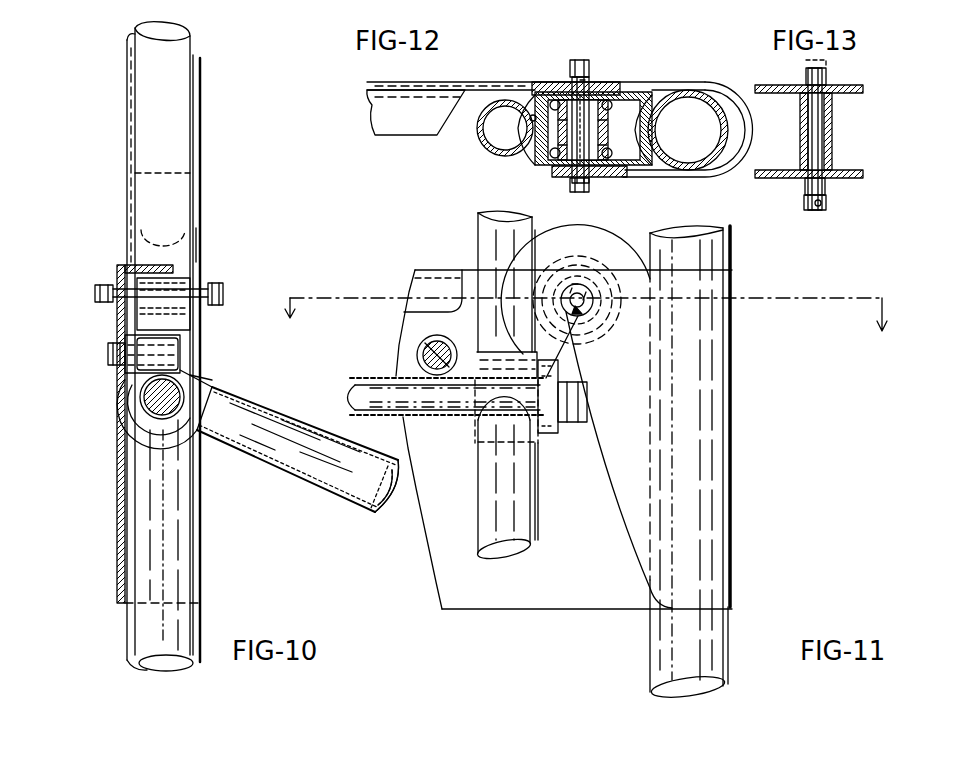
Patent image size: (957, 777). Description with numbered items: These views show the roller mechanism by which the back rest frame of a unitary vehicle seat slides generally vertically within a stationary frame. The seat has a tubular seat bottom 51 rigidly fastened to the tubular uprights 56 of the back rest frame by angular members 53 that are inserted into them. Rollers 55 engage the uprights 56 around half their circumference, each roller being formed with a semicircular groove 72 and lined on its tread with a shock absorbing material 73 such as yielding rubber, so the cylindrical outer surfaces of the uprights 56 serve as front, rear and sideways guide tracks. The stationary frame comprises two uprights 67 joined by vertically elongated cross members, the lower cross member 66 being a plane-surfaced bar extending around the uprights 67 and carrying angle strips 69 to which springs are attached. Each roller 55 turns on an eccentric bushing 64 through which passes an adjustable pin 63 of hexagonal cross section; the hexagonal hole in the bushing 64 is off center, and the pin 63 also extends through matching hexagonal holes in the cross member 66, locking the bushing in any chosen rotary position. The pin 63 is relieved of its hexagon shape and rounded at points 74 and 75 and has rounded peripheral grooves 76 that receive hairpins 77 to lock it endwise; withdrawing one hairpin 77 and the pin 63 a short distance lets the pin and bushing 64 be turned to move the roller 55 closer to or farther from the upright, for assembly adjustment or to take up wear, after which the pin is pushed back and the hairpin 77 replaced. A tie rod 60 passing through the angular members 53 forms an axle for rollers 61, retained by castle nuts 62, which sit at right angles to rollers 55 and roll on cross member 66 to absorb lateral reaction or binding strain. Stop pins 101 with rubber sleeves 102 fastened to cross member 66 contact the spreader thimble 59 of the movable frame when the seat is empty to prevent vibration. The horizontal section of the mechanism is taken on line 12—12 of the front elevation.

In FIG. 10, the tubular seat bottom 51 is at (378, 500).
In FIG. 11, the tubular seat bottom 51 is at (497, 500).
In FIG. 10, the angular members 53 is at (148, 190).
In FIG. 11, the angular members 53 is at (497, 368).
In FIG. 10, the rollers 55 is at (198, 247).
In FIG. 11, the rollers 55 is at (603, 238).
In FIG. 12, the rollers 55 is at (570, 145).
In FIG. 10, the tubular uprights 56 is at (170, 62).
In FIG. 12, the tubular uprights 56 is at (488, 128).
In FIG. 10, the spreader thimble 59 is at (190, 380).
In FIG. 11, the spreader thimble 59 is at (375, 378).
In FIG. 10, the tie rod 60 is at (165, 412).
In FIG. 11, the tie rod 60 is at (395, 390).
In FIG. 10, the rollers 61 is at (158, 392).
In FIG. 11, the rollers 61 is at (549, 432).
In FIG. 11, the castle nuts 62 is at (555, 430).
In FIG. 10, the adjustable pins 63 is at (215, 284).
In FIG. 11, the adjustable pins 63 is at (588, 301).
In FIG. 12, the adjustable pins 63 is at (592, 74).
In FIG. 13, the adjustable pins 63 is at (822, 197).
In FIG. 10, the eccentric bushings 64 is at (140, 310).
In FIG. 11, the eccentric bushings 64 is at (583, 312).
In FIG. 12, the eccentric bushings 64 is at (618, 100).
In FIG. 13, the eccentric bushings 64 is at (833, 112).
In FIG. 10, the lower cross member 66 is at (117, 495).
In FIG. 11, the lower cross member 66 is at (588, 598).
In FIG. 12, the lower cross member 66 is at (440, 82).
In FIG. 13, the lower cross member 66 is at (830, 172).
In FIG. 10, the uprights 67 is at (200, 100).
In FIG. 11, the uprights 67 is at (727, 622).
In FIG. 12, the uprights 67 is at (700, 136).
In FIG. 10, the angle strips 69 is at (132, 268).
In FIG. 12, the angle strips 69 is at (383, 110).
In FIG. 10, the semicircular groove 72 is at (145, 240).
In FIG. 12, the semicircular groove 72 is at (627, 133).
In FIG. 12, the shock absorbing material 73 is at (533, 120).
In FIG. 12, the rounded point 74 is at (579, 62).
In FIG. 13, the rounded point 74 is at (822, 85).
In FIG. 12, the rounded point 75 is at (575, 178).
In FIG. 13, the rounded point 75 is at (805, 181).
In FIG. 10, the peripheral grooves 76 is at (112, 300).
In FIG. 12, the peripheral grooves 76 is at (572, 80).
In FIG. 13, the peripheral grooves 76 is at (806, 200).
In FIG. 11, the hairpins 77 is at (575, 316).
In FIG. 12, the hairpins 77 is at (590, 80).
In FIG. 13, the hairpins 77 is at (825, 192).
In FIG. 10, the stop pins 101 is at (140, 352).
In FIG. 11, the stop pins 101 is at (430, 350).
In FIG. 10, the rubber sleeves 102 is at (178, 339).
In FIG. 11, the rubber sleeves 102 is at (430, 345).
In FIG. 11, the section line 12— 12 is at (592, 329).